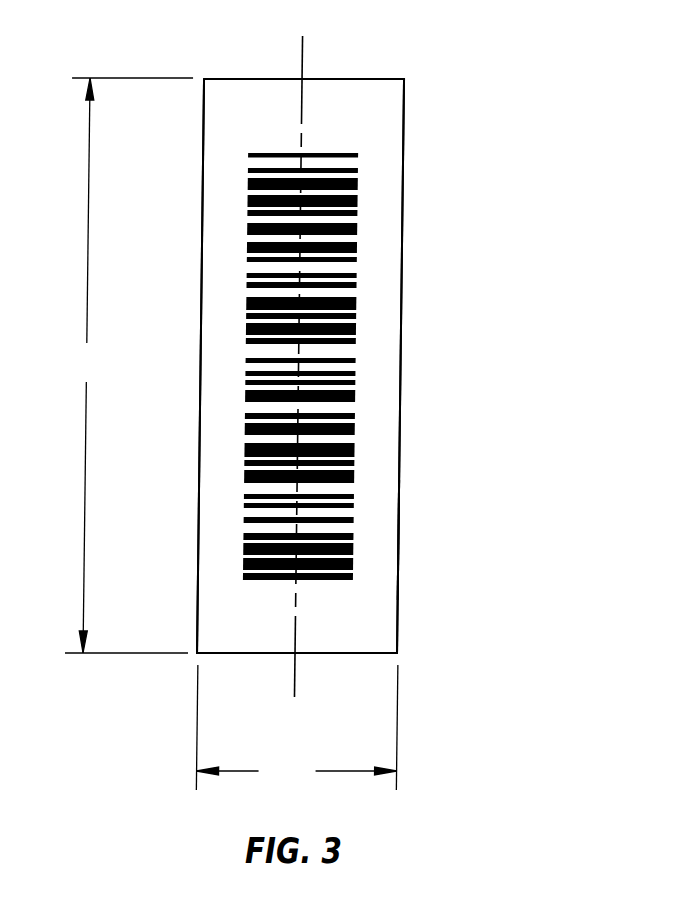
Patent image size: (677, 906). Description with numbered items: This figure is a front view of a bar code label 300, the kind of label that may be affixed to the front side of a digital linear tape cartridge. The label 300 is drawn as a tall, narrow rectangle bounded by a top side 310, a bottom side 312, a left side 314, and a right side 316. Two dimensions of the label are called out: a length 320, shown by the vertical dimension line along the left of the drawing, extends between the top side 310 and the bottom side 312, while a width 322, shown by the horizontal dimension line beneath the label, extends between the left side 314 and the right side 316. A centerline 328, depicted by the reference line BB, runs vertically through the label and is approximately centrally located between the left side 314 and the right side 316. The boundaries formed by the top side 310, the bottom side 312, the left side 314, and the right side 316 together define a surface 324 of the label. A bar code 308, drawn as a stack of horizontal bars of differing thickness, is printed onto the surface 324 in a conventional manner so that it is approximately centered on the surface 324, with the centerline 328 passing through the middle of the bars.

The bar code label 300 is at (531, 101).
The bar code 308 is at (376, 202).
The top side 310 is at (242, 79).
The bottom side 312 is at (312, 654).
The left side 314 is at (199, 510).
The right side 316 is at (400, 367).
The length 320 is at (130, 365).
The width 322 is at (297, 727).
The surface 324 is at (380, 525).
The centerline 328 is at (303, 57).